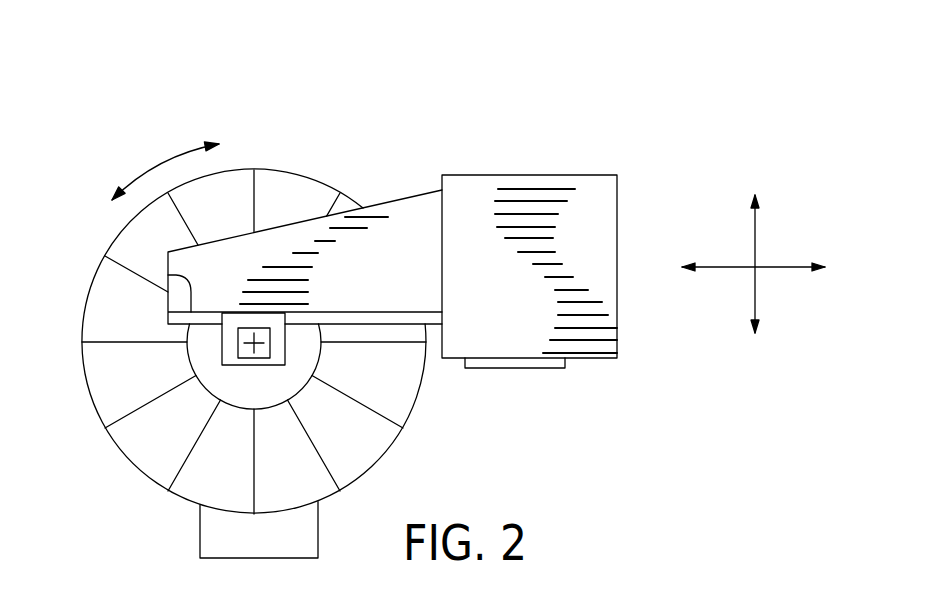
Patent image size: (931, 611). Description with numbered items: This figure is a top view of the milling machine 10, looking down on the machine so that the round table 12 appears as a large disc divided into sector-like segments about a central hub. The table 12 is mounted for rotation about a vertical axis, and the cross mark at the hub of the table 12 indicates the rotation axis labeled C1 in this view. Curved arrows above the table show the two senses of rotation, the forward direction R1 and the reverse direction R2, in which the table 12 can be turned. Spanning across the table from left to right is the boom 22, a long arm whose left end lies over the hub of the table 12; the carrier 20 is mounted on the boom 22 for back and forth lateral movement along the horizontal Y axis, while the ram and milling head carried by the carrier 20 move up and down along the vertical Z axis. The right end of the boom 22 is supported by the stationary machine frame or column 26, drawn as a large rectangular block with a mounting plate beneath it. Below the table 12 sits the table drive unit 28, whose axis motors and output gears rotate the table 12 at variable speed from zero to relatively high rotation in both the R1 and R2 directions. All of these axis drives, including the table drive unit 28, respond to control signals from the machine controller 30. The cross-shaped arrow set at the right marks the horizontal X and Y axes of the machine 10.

The milling machine 10 is at (473, 105).
The table 12 is at (306, 177).
The carrier 20 is at (217, 355).
The boom 22 is at (168, 275).
The stationary machine frame or column 26 is at (568, 178).
The table drive unit 28 is at (200, 530).
The machine controller 30 is at (547, 365).
The center axis C1 is at (262, 344).
The forward rotation direction R1 is at (184, 163).
The reverse rotation direction R2 is at (90, 207).